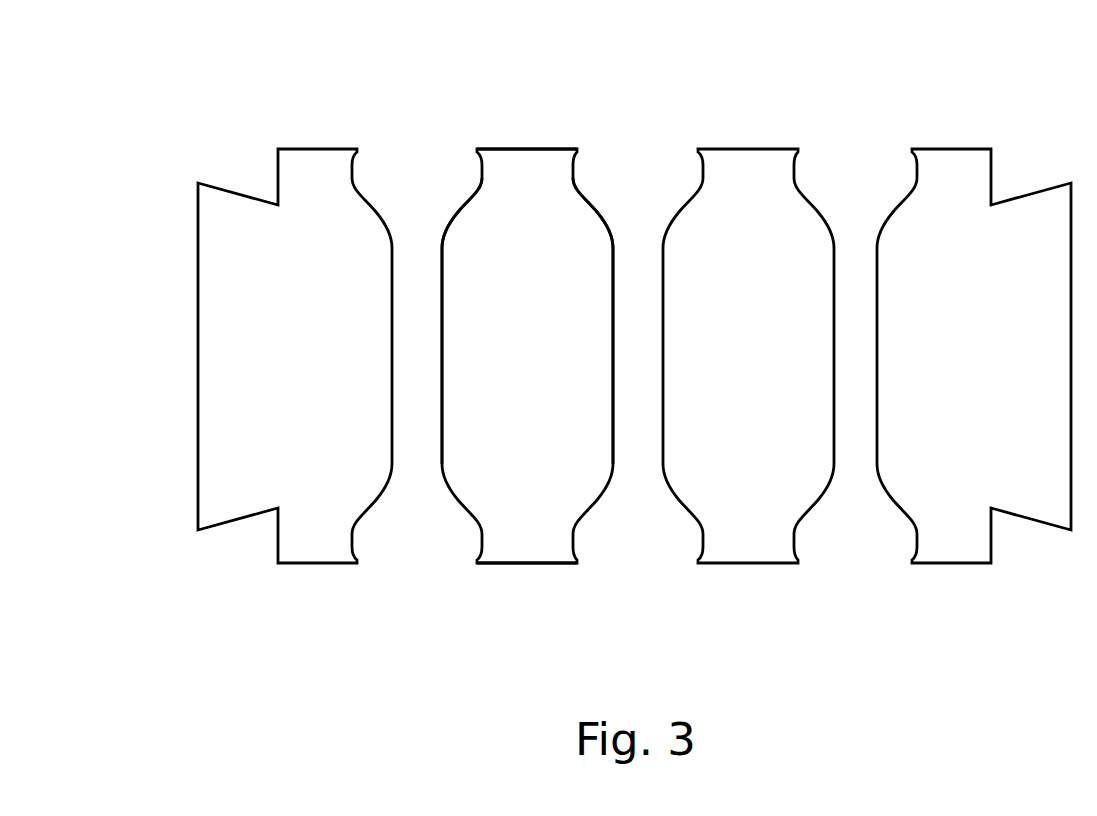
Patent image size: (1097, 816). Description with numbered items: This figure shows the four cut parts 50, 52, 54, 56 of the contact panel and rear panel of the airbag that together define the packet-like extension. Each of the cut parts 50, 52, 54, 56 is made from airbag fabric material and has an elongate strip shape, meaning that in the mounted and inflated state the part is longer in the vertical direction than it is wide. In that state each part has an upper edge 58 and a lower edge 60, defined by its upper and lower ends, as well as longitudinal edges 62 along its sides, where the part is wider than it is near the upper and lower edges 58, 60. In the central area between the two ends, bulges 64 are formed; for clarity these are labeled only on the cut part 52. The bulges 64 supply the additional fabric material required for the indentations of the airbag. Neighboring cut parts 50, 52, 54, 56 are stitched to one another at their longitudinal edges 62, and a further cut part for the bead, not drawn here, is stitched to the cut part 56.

The cut part 50 is at (233, 522).
The cut part 52 is at (507, 538).
The cut part 54 is at (740, 563).
The cut part 56 is at (947, 563).
The upper edge 58 is at (523, 149).
The lower edge 60 is at (542, 563).
The longitudinal edge 62 is at (457, 213).
The bulge 64 is at (612, 303).